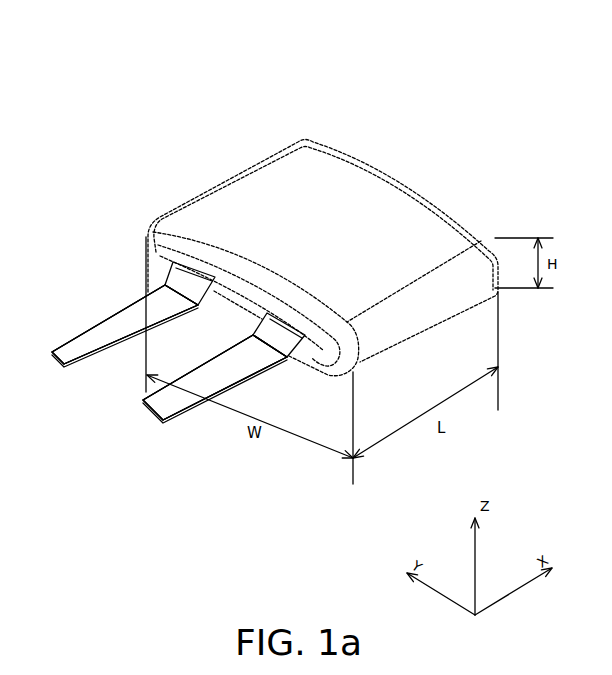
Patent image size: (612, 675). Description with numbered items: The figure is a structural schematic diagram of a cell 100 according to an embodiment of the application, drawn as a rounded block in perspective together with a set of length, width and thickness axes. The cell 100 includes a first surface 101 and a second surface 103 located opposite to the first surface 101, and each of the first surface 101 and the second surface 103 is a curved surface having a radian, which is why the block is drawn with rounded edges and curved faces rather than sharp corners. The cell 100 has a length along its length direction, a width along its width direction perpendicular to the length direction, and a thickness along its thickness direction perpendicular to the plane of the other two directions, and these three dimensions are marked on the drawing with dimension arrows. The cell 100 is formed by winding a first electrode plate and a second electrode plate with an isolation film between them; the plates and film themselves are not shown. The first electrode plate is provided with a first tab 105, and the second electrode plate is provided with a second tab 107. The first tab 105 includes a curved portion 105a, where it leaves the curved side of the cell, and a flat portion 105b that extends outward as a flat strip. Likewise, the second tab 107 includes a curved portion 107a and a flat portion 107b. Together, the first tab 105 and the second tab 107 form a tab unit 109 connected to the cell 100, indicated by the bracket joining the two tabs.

The cell 100 is at (290, 22).
The first surface 101 is at (380, 182).
The second surface 103 is at (228, 305).
The first tab 105 is at (151, 412).
The curved portion 105a is at (290, 350).
The flat portion 105b is at (246, 368).
The second tab 107 is at (74, 369).
The curved portion 107a is at (180, 276).
The flat portion 107b is at (80, 340).
The tab unit 109 is at (63, 440).